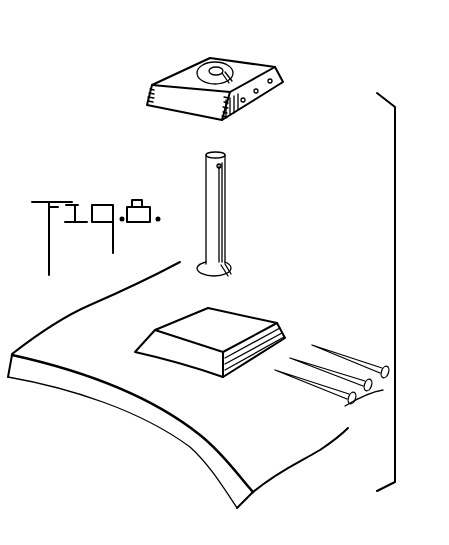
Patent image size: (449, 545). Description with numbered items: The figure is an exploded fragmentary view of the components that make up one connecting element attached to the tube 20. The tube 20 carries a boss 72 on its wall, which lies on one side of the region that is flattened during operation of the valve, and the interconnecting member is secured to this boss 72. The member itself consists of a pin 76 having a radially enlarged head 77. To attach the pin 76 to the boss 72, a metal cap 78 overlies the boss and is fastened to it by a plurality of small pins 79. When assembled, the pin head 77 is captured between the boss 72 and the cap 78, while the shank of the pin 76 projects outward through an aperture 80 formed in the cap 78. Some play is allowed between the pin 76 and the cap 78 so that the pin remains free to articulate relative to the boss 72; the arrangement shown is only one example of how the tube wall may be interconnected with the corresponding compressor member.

The tube 20 is at (243, 434).
The boss 72 is at (155, 330).
The pin 76 is at (226, 187).
The head 77 is at (231, 268).
The metal cap 78 is at (258, 66).
The pins 79 is at (380, 394).
The aperture 80 is at (221, 68).